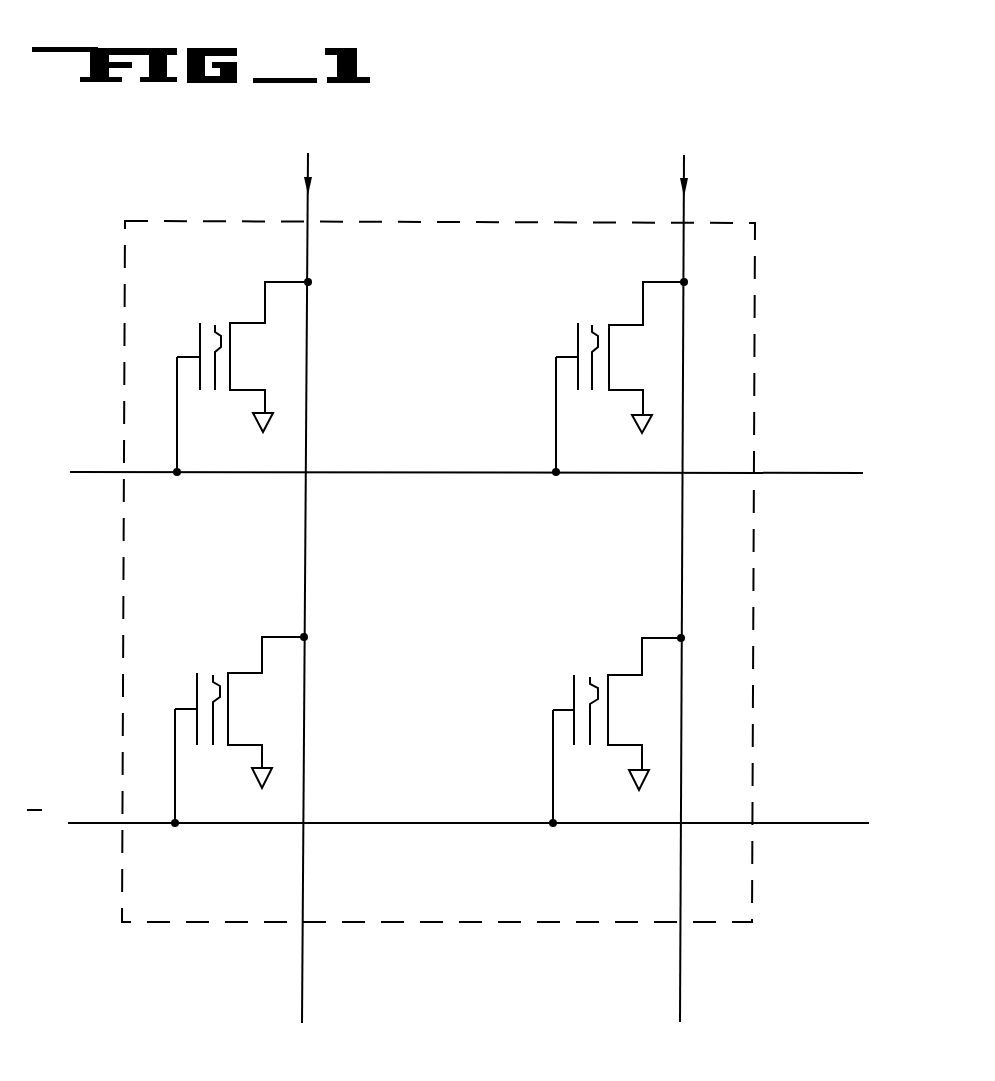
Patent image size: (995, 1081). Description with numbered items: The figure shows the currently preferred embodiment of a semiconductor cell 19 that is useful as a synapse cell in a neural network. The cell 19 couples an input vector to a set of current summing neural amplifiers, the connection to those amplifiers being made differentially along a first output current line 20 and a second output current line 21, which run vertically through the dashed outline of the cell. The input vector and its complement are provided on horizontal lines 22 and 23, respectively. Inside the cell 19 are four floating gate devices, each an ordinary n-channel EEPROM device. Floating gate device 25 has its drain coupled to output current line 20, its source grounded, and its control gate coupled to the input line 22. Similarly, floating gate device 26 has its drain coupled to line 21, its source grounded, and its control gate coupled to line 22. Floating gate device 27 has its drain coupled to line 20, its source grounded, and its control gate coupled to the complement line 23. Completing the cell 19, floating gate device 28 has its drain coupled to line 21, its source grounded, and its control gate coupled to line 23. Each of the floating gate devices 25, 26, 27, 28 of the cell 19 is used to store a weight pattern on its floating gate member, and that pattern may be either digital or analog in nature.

The semiconductor cell 19 is at (495, 175).
The output current line 20 is at (305, 170).
The output current line 21 is at (681, 171).
The input line 22 is at (100, 473).
The complement input line 23 is at (93, 825).
The floating gate device 25 is at (210, 317).
The floating gate device 26 is at (588, 317).
The floating gate device 27 is at (206, 670).
The floating gate device 28 is at (584, 670).